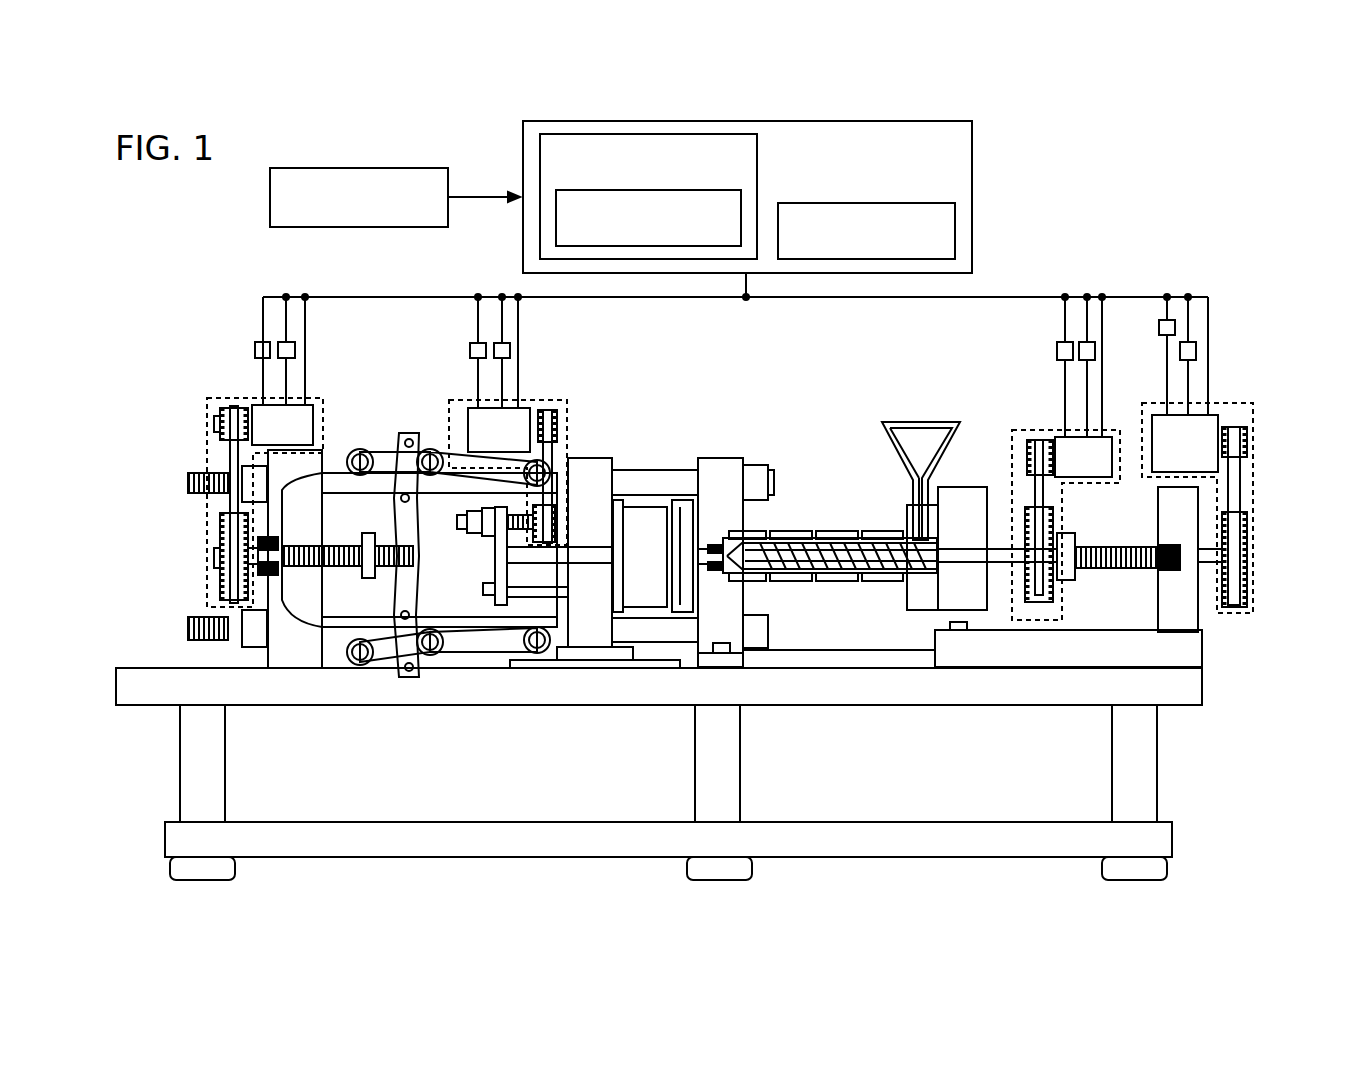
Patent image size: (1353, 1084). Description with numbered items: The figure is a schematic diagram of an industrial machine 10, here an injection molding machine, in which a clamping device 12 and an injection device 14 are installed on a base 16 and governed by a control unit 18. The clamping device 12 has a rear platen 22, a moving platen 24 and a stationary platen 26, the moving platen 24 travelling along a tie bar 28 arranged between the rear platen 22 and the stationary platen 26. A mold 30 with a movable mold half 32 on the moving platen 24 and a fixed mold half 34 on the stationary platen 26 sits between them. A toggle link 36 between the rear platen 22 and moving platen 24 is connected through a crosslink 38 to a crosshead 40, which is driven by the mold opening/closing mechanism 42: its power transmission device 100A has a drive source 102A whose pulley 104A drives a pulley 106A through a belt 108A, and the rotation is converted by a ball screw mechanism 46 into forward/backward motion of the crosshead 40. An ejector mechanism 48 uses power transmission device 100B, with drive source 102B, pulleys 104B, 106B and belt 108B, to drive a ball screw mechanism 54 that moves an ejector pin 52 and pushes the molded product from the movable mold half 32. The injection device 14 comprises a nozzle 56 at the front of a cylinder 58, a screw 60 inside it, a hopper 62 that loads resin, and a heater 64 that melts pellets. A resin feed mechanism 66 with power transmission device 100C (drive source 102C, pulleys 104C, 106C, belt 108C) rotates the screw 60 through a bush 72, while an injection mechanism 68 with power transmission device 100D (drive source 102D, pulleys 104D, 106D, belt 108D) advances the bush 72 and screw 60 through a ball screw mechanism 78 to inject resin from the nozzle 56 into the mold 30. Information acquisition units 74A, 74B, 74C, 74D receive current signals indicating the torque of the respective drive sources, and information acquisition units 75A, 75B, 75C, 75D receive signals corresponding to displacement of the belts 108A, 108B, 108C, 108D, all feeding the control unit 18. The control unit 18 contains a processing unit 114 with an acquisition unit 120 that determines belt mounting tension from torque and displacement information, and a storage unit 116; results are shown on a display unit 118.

The industrial machine 10 is at (196, 222).
The clamping device 12 is at (602, 358).
The injection device 14 is at (930, 362).
The base 16 is at (903, 690).
The control unit 18 is at (751, 196).
The rear platen 22 is at (332, 460).
The moving platen 24 is at (606, 458).
The stationary platen 26 is at (716, 458).
The tie bar 28 is at (674, 470).
The mold 30 is at (741, 535).
The movable mold half 32 is at (756, 479).
The fixed mold half 34 is at (720, 520).
The toggle link 36 is at (388, 384).
The crosslink 38 is at (409, 432).
The crosshead 40 is at (400, 521).
The mold opening/closing mechanism 42 is at (226, 383).
The ball screw mechanism 46 is at (340, 577).
The ejector mechanism 48 is at (546, 384).
The ejector pin 52 is at (588, 547).
The ball screw mechanism 54 is at (465, 540).
The nozzle 56 is at (715, 575).
The cylinder 58 is at (797, 575).
The screw 60 is at (843, 566).
The hopper 62 is at (915, 427).
The heater 64 is at (886, 582).
The resin feed mechanism 66 is at (1112, 340).
The injection mechanism 68 is at (1248, 392).
The bush 72 is at (1060, 570).
The ball screw mechanism 78 is at (1116, 578).
The information acquisition unit 74A is at (296, 350).
The information acquisition unit 74B is at (511, 346).
The information acquisition unit 74C is at (1095, 350).
The information acquisition unit 74D is at (1197, 350).
The information acquisition unit 75A is at (255, 345).
The information acquisition unit 75B is at (470, 350).
The information acquisition unit 75C is at (1057, 350).
The information acquisition unit 75D is at (1176, 328).
The power transmission device 100A is at (256, 452).
The power transmission device 100B is at (539, 457).
The power transmission device 100C is at (1058, 483).
The power transmission device 100D is at (1221, 455).
The drive source 102A is at (295, 414).
The drive source 102B is at (470, 421).
The drive source 102C is at (1100, 445).
The drive source 102D is at (1160, 452).
The pulley 104A is at (220, 421).
The pulley 104B is at (558, 416).
The pulley 104C is at (1027, 456).
The pulley 104D is at (1248, 433).
The pulley 106A is at (220, 539).
The pulley 106B is at (556, 532).
The pulley 106C is at (1030, 598).
The pulley 106D is at (1248, 532).
The belt 108A is at (232, 461).
The belt 108B is at (553, 449).
The belt 108C is at (1044, 515).
The belt 108D is at (1241, 496).
The processing unit 114 is at (540, 152).
The storage unit 116 is at (955, 225).
The display unit 118 is at (318, 168).
The acquisition unit 120 is at (556, 228).